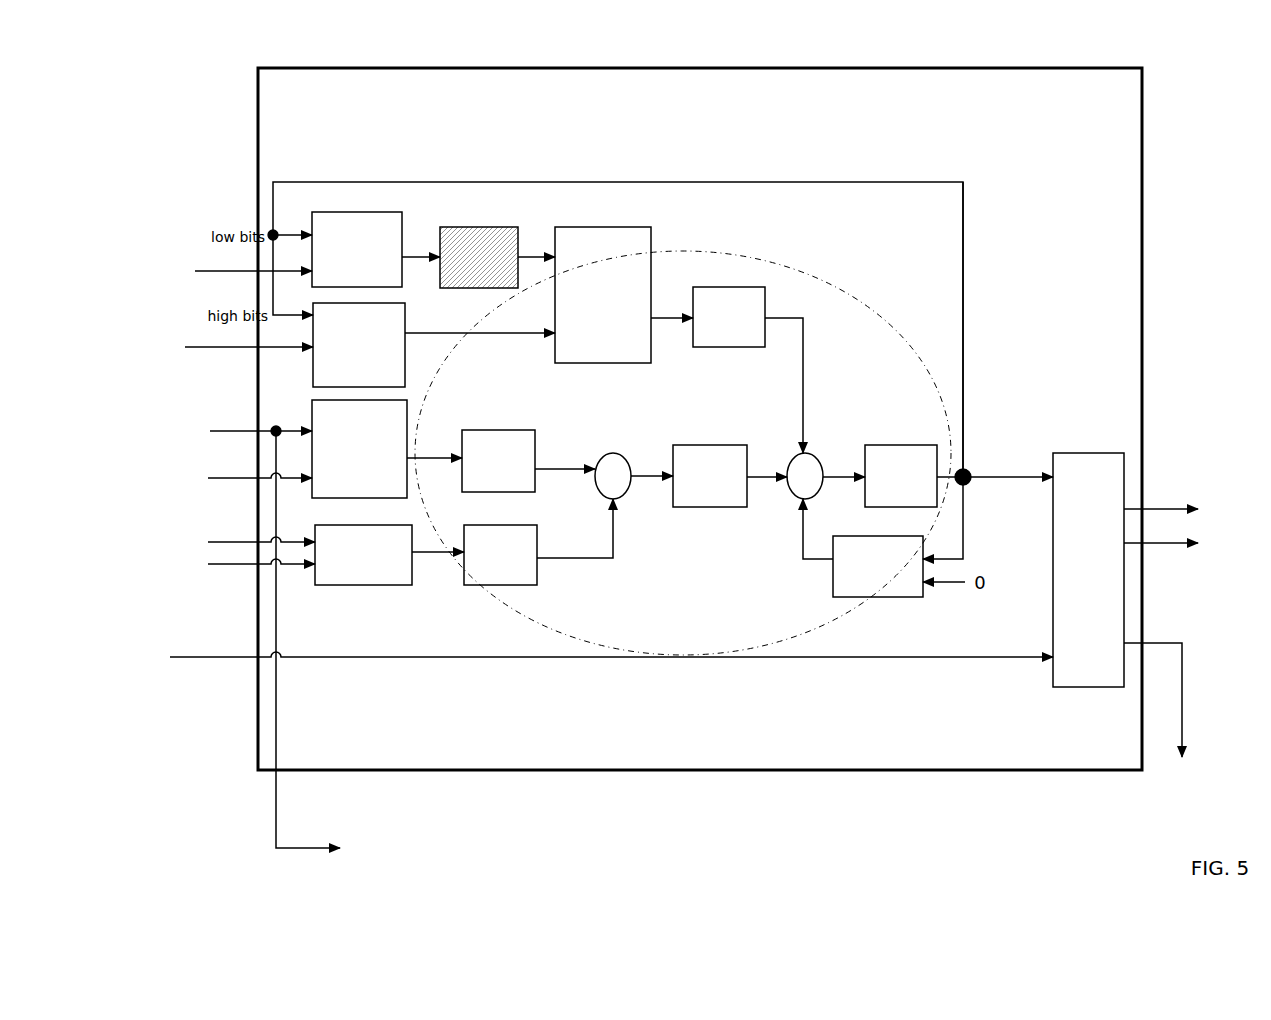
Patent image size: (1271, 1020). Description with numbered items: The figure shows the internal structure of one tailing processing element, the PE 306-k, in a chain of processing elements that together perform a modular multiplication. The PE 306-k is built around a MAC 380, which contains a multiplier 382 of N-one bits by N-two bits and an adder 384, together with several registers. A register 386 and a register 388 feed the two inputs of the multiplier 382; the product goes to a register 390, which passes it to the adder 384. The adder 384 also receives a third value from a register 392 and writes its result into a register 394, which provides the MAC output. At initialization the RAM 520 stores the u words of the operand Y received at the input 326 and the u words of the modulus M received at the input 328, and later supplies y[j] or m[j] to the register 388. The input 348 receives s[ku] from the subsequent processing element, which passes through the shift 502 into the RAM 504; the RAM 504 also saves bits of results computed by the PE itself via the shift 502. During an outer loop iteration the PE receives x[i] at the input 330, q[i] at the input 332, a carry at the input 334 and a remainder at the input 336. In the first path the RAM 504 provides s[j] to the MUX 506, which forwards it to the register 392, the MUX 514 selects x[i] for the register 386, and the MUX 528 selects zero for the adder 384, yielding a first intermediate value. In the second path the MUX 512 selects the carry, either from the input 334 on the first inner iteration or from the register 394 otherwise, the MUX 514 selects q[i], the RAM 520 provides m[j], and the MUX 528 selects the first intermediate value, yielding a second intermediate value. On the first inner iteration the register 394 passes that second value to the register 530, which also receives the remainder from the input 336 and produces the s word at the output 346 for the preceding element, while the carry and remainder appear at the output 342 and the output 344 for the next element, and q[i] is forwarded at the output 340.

The processing element 306-k is at (1017, 758).
The MAC 380 is at (790, 270).
The multiplier 382 is at (618, 453).
The adder 384 is at (823, 466).
The register 386 is at (500, 492).
The register 388 is at (505, 585).
The register 390 is at (718, 507).
The register 392 is at (730, 347).
The register 394 is at (898, 452).
The shift 502 is at (341, 274).
The RAM 504 is at (464, 277).
The MUX 506 is at (587, 326).
The MUX 512 is at (343, 376).
The MUX 514 is at (344, 475).
The RAM 520 is at (347, 577).
The MUX 528 is at (862, 586).
The register 530 is at (1077, 453).
The input 326 is at (274, 552).
The input 328 is at (258, 575).
The input 330 is at (256, 480).
The input 332 is at (252, 433).
The input 334 is at (257, 350).
The input 336 is at (255, 662).
The output 340 is at (278, 769).
The output 342 is at (1142, 512).
The output 344 is at (1146, 546).
The output 346 is at (1143, 650).
The input 348 is at (255, 273).